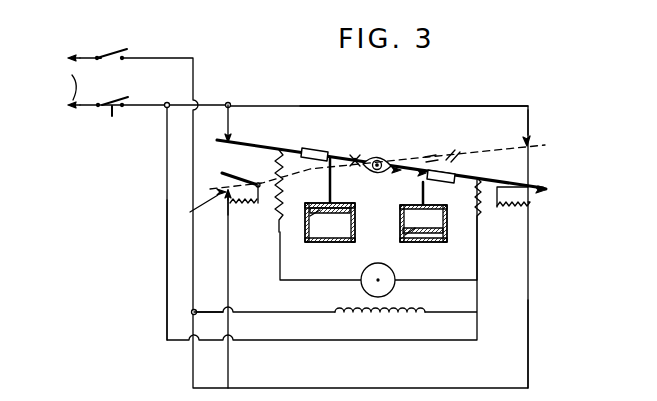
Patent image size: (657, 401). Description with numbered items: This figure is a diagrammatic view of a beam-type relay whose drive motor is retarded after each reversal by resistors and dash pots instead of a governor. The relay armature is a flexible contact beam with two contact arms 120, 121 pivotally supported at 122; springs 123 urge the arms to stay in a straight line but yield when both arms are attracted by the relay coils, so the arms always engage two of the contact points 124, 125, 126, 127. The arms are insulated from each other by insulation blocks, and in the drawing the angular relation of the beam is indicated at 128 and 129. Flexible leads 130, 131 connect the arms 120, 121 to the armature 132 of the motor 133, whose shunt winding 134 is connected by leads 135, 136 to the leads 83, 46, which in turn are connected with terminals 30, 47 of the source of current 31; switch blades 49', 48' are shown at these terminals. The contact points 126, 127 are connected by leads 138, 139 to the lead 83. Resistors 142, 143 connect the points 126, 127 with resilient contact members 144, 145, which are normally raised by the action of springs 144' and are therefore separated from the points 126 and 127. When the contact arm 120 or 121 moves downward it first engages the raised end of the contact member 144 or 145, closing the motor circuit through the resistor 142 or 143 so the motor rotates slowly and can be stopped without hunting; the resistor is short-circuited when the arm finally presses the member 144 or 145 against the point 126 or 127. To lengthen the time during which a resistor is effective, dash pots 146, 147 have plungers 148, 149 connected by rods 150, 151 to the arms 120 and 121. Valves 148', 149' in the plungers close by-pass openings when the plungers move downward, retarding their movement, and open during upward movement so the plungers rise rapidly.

The terminal 30 is at (72, 55).
The source of current 31 is at (60, 85).
The terminal 47 is at (70, 110).
The switch blade 49' is at (118, 41).
The switch blade 48' is at (113, 120).
The lead 46 is at (418, 105).
The lead 83 is at (203, 222).
The contact arm 120 is at (255, 146).
The contact arm 121 is at (547, 187).
The pivot 122 is at (388, 155).
The springs 123 is at (365, 156).
The contact point 124 is at (232, 130).
The contact point 125 is at (537, 133).
The contact point 126 is at (190, 212).
The contact point 127 is at (532, 192).
The insulating block 128 is at (315, 149).
The angle indication 129 is at (452, 154).
The flexible lead 130 is at (277, 205).
The flexible lead 131 is at (478, 212).
The armature 132 is at (394, 275).
The motor 133 is at (406, 292).
The shunt winding 134 is at (380, 324).
The lead 135 is at (250, 312).
The lead 136 is at (167, 283).
The lead 138 is at (228, 275).
The lead 139 is at (530, 343).
The resistor 142 is at (228, 198).
The resistor 143 is at (525, 208).
The resilient contact member 144 is at (241, 177).
The spring 144' is at (192, 187).
The resilient contact member 145 is at (548, 191).
The dash pot 146 is at (322, 243).
The dash pot 147 is at (443, 243).
The plunger 148 is at (352, 221).
The valve 148' is at (301, 241).
The plunger 149 is at (442, 212).
The valve 149' is at (390, 245).
The rod 150 is at (333, 187).
The rod 151 is at (421, 190).